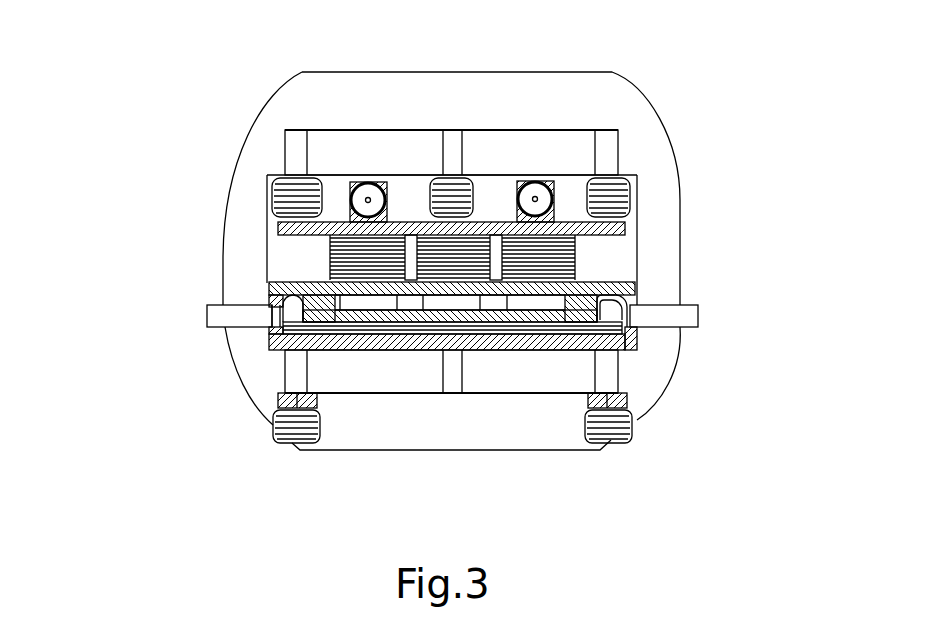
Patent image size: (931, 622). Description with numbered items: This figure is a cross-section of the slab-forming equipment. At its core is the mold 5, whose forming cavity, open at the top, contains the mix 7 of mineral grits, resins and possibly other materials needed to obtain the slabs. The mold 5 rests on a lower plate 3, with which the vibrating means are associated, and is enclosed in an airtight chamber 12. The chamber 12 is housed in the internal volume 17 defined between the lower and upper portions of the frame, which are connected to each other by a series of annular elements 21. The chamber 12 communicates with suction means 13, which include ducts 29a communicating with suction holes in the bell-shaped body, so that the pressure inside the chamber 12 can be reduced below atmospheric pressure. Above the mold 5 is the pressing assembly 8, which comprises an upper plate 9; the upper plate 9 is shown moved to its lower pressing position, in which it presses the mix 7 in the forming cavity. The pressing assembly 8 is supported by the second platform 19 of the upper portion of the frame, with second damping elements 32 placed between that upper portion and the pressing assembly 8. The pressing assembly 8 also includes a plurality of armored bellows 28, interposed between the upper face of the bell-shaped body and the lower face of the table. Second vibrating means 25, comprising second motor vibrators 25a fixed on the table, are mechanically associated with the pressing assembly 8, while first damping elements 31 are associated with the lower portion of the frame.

The second motor vibrators 25a is at (362, 184).
The second vibrating means 25 is at (372, 163).
The annular elements 21 is at (606, 98).
The second platform 19 is at (275, 152).
The second damping elements 32 is at (287, 206).
The pressing assembly 8 is at (612, 243).
The internal volume 17 is at (287, 246).
The upper plate 9 is at (562, 303).
The armored bellows 28 is at (347, 262).
The suction means 13 is at (195, 321).
The ducts 29a is at (687, 313).
The mix 7 is at (628, 332).
The airtight chamber 12 is at (288, 310).
The lower plate 3 is at (622, 351).
The first damping elements 31 is at (277, 432).
The mold 5 is at (378, 352).